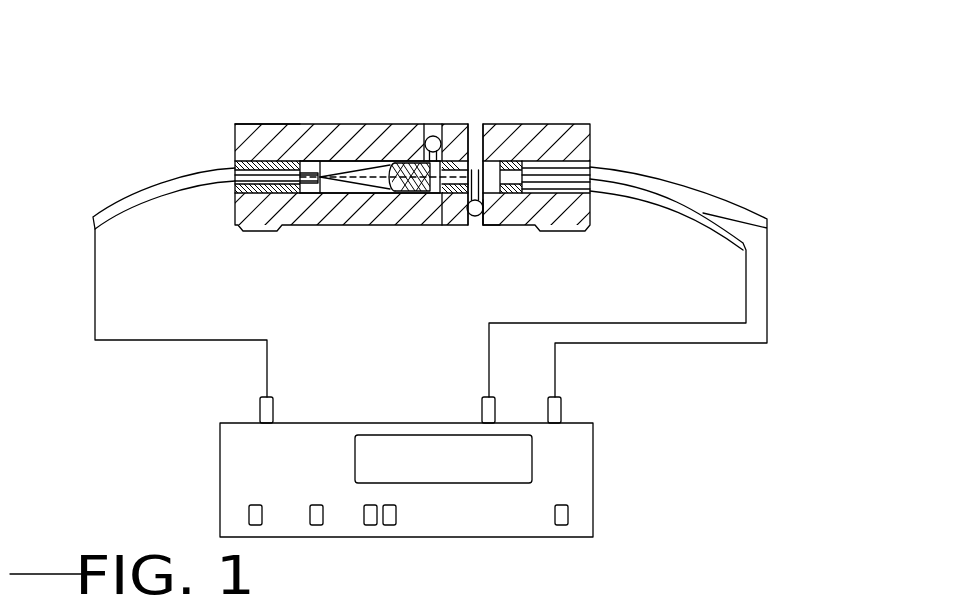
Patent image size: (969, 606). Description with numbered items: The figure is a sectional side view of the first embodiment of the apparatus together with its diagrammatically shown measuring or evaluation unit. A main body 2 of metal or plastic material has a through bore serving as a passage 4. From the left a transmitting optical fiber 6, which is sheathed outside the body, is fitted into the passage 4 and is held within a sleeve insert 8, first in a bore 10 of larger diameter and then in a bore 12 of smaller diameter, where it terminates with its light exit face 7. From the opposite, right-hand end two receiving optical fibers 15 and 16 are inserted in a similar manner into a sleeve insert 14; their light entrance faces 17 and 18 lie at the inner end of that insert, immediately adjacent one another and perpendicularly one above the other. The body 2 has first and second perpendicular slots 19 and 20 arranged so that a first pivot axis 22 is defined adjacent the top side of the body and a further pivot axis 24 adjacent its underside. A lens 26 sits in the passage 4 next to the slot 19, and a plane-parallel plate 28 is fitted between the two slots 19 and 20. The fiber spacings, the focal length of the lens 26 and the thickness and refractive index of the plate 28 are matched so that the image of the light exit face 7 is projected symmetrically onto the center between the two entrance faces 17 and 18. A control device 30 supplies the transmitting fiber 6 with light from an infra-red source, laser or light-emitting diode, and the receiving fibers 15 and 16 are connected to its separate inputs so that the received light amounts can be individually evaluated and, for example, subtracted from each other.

The main body 2 is at (358, 124).
The passage 4 is at (333, 178).
The transmitting optical fiber 6 is at (130, 193).
The light exit face 7 is at (323, 124).
The sleeve insert 8 is at (268, 124).
The bore of larger diameter 10 is at (238, 190).
The bore of smaller diameter 12 is at (305, 185).
The sleeve insert 14 is at (532, 125).
The receiving optical fiber 15 is at (728, 197).
The receiving optical fiber 16 is at (684, 218).
The light entrance face 17 is at (506, 128).
The light entrance face 18 is at (498, 224).
The first slot 19 is at (430, 226).
The second slot 20 is at (475, 128).
The first pivot axis 22 is at (431, 136).
The further pivot axis 24 is at (474, 216).
The lens 26 is at (397, 205).
The plane-parallel plate 28 is at (458, 226).
The control device 30 is at (573, 450).